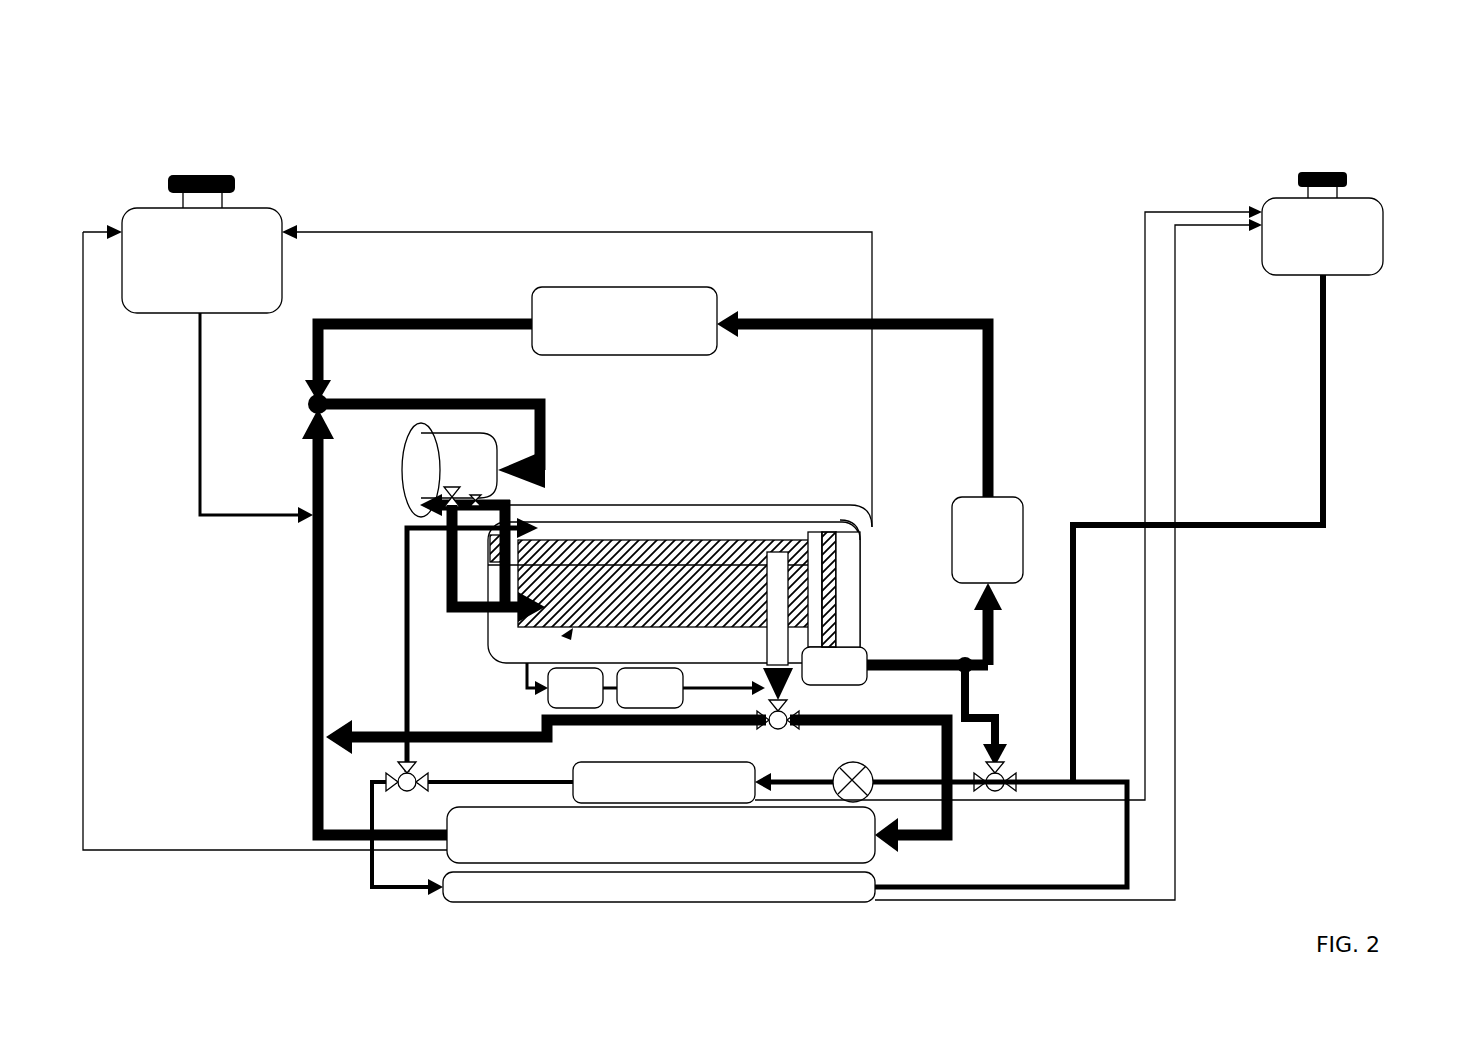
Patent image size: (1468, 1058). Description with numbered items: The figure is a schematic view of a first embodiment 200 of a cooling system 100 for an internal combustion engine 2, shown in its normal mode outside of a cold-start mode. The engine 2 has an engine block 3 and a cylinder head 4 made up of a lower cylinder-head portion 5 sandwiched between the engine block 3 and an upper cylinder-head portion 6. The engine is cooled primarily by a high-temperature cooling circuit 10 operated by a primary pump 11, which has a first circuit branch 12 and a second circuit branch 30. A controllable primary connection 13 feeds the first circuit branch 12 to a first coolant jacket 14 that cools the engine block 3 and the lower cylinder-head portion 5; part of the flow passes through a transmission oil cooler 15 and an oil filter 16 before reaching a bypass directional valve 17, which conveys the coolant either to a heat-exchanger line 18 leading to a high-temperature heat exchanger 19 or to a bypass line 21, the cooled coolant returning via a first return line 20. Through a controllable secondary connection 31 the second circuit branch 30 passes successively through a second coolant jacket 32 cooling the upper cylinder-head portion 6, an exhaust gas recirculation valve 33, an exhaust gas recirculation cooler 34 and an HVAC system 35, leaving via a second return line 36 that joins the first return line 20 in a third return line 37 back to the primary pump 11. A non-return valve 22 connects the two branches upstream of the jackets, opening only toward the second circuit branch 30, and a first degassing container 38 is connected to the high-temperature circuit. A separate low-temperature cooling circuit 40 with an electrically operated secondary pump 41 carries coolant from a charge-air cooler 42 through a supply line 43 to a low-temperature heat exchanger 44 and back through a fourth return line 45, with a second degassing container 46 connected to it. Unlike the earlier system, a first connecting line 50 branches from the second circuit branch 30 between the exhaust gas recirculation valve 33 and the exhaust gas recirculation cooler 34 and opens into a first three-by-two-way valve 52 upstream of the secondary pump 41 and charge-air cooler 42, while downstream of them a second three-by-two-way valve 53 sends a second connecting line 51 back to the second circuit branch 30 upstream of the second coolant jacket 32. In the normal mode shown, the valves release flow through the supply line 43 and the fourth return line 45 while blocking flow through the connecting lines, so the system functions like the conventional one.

The internal combustion engine 2 is at (858, 486).
The engine block 3 is at (862, 610).
The cylinder head 4 is at (766, 506).
The lower cylinder-head portion 5 is at (862, 554).
The upper cylinder-head portion 6 is at (866, 514).
The high-temperature cooling circuit 10 is at (920, 196).
The primary pump 11 is at (449, 470).
The first circuit branch 12 is at (290, 612).
The controllable primary connection 13 is at (430, 504).
The first coolant jacket 14 is at (571, 632).
The transmission oil cooler 15 is at (565, 685).
The oil filter 16 is at (684, 688).
The bypass directional valve 17 is at (781, 732).
The heat-exchanger line 18 is at (952, 808).
The high-temperature heat exchanger 19 is at (661, 835).
The first return line 20 is at (306, 670).
The bypass line 21 is at (483, 724).
The non-return valve 22 is at (474, 550).
The second circuit branch 30 is at (794, 238).
The controllable secondary connection 31 is at (492, 514).
The second coolant jacket 32 is at (688, 520).
The exhaust gas recirculation valve 33 is at (834, 608).
The exhaust gas recirculation cooler 34 is at (987, 581).
The HVAC system 35 is at (624, 321).
The second return line 36 is at (414, 320).
The third return line 37 is at (548, 430).
The first degassing container 38 is at (202, 244).
The low-temperature cooling circuit 40 is at (1140, 820).
The secondary pump 41 is at (870, 774).
The charge-air cooler 42 is at (917, 504).
The supply line 43 is at (372, 855).
The low-temperature heat exchanger 44 is at (852, 560).
The fourth return line 45 is at (1127, 843).
The second degassing container 46 is at (1322, 223).
The first connecting line 50 is at (997, 706).
The second connecting line 51 is at (395, 645).
The first 3/2-way valve 52 is at (1010, 772).
The second 3/2-way valve 53 is at (386, 774).
The cooling system 100 is at (1238, 142).
The first embodiment 200 is at (1386, 72).